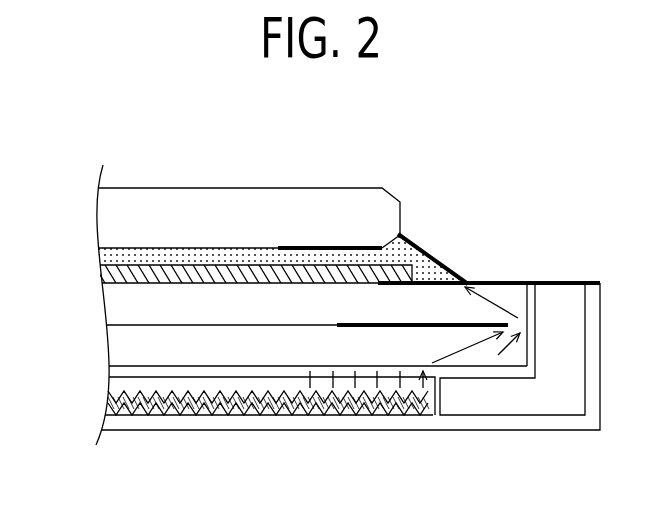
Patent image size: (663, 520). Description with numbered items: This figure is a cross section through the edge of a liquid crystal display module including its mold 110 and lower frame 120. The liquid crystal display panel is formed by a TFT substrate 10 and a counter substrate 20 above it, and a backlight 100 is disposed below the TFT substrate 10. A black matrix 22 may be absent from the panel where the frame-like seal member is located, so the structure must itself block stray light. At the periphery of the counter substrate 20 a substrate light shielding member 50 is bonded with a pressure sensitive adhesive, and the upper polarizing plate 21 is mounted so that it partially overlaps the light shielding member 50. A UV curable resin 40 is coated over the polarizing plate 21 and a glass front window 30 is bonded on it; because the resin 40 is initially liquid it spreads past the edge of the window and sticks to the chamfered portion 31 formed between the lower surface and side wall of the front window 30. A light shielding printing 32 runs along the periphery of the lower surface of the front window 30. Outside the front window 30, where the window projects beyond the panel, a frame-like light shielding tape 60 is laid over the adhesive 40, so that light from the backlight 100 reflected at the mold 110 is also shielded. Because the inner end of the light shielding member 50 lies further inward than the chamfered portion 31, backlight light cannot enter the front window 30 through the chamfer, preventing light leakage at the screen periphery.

The TFT substrate 10 is at (120, 345).
The counter substrate 20 is at (118, 305).
The upper polarizing plate 21 is at (112, 278).
The black matrix 22 is at (372, 327).
The front window 30 is at (243, 197).
The chamfered portion 31 is at (413, 249).
The light shielding printing 32 is at (326, 247).
The UV curable resin 40 is at (176, 256).
The substrate light shielding member 50 is at (442, 263).
The frame-like light shielding tape 60 is at (567, 282).
The backlight 100 is at (101, 378).
The mold 110 is at (528, 400).
The lower frame 120 is at (448, 430).